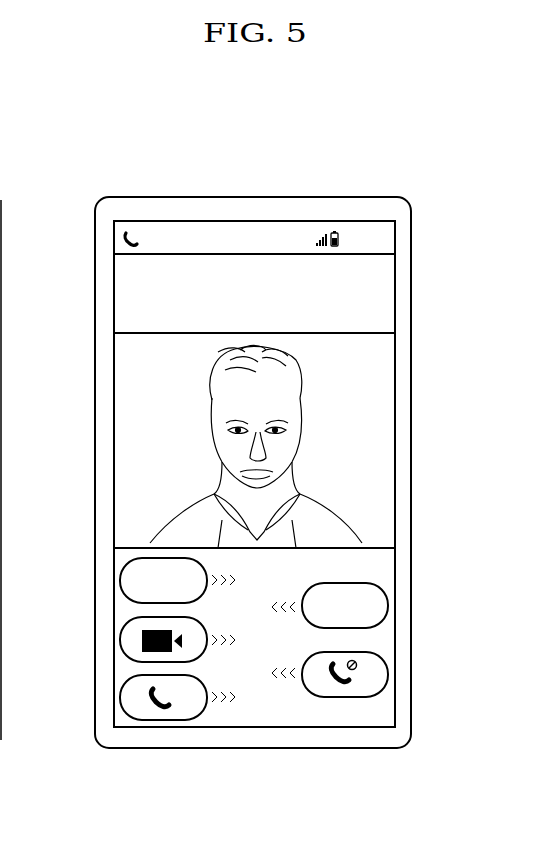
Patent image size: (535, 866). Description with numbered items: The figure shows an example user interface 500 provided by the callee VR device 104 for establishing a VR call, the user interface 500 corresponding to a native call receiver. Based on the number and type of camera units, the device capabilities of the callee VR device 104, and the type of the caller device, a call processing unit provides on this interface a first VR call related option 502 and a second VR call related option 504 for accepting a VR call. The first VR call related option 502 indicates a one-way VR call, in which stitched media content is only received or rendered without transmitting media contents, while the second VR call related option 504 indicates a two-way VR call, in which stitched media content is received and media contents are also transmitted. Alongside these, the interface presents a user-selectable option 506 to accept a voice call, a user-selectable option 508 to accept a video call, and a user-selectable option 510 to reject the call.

The callee VR device 104 is at (268, 150).
The user interface 500 is at (127, 423).
The first VR call related option 502 is at (127, 580).
The second VR call related option 504 is at (383, 598).
The user-selectable option to accept a voice call 506 is at (150, 712).
The user-selectable option to accept a video call 508 is at (127, 633).
The user-selectable option to reject the call 510 is at (325, 687).